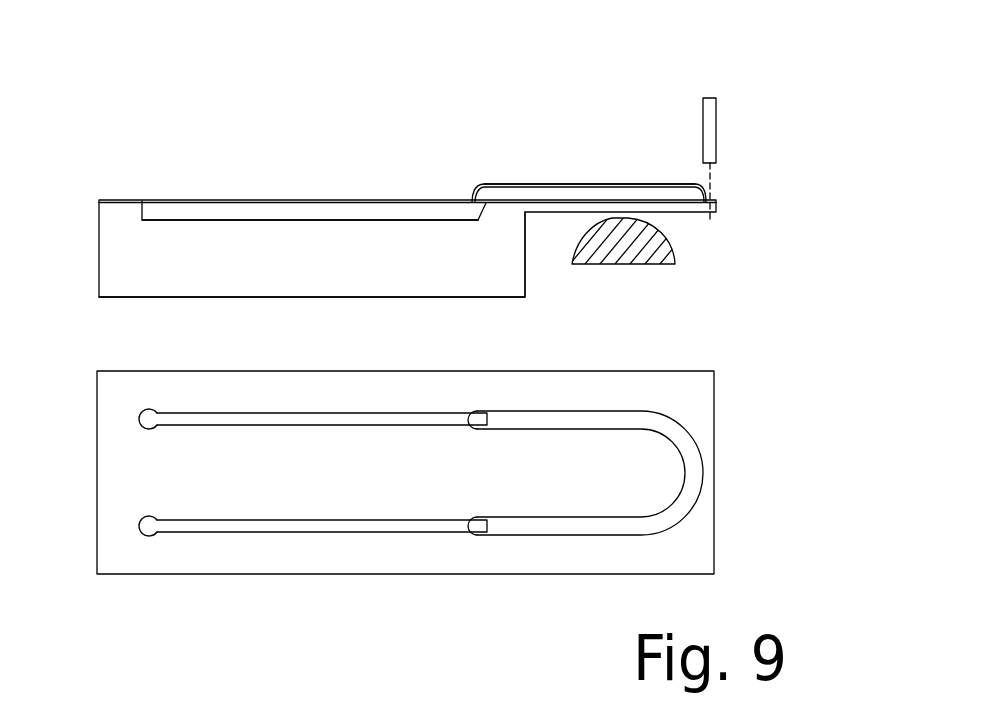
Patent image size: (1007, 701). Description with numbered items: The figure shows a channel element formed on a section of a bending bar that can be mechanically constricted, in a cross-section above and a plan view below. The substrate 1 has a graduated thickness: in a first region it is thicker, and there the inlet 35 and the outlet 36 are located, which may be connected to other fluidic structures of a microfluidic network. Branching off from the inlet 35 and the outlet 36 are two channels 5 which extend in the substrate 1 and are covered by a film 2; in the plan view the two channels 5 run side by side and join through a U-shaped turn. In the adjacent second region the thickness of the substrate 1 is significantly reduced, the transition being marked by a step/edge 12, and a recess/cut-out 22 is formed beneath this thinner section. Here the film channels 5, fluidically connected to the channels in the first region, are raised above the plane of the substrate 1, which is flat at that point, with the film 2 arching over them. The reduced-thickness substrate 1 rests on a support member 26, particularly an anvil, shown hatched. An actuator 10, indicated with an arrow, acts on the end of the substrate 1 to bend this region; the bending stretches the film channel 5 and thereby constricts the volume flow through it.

The substrate 1 is at (133, 258).
The film 2 is at (477, 186).
The channel 5 is at (370, 212).
The actuator 10 is at (710, 88).
The step/edge 12 is at (489, 218).
The recess/cut-out 22 is at (511, 276).
The support member 26 is at (645, 248).
The inlet 35 is at (150, 528).
The outlet 36 is at (151, 416).